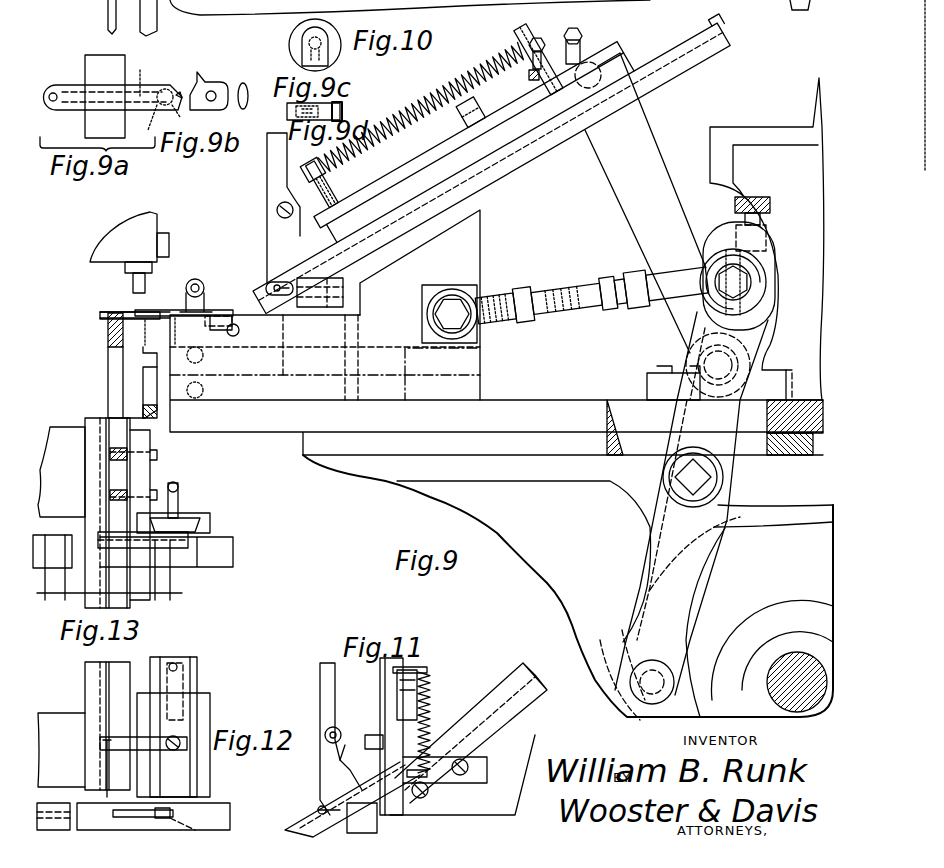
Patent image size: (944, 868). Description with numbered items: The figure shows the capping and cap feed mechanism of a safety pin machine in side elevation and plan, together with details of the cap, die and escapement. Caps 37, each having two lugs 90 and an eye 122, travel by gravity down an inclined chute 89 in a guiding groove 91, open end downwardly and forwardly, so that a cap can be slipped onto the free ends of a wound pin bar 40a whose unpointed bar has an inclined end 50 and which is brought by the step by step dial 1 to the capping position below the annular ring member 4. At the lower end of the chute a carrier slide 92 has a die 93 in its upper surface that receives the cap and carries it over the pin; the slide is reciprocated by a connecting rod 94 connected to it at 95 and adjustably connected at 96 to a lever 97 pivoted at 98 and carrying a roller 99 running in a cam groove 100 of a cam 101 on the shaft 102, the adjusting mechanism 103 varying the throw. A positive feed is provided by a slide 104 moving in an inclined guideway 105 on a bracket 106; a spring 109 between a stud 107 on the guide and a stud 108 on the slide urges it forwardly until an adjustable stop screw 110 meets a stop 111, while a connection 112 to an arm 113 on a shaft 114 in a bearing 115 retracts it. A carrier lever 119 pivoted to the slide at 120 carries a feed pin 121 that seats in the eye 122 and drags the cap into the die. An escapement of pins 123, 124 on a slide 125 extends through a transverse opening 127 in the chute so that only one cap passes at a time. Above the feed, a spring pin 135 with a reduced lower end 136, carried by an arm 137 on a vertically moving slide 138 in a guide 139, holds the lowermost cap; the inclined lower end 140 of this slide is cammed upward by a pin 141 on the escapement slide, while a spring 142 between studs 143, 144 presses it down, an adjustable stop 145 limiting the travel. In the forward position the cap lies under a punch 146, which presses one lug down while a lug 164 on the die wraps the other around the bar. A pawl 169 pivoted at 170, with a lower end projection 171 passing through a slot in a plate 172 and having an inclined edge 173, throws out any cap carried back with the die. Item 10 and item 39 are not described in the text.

In FIG. 9, the dial 1 is at (96, 335).
In FIG. 9, the annular ring member 4 is at (108, 6).
In FIG. 9A, the pin 10 is at (53, 103).
In FIG. 9A, the cap 37 is at (166, 112).
In FIG. 9B, the cap 37 is at (219, 80).
In FIG. 9C, the cap 37 is at (328, 31).
In FIG. 9, the plate 39 is at (126, 303).
In FIG. 9A, the wound pin bar 40a is at (86, 80).
In FIG. 9, the wound pin bar 40a is at (102, 322).
In FIG. 9A, the inclined end 50 is at (178, 90).
In FIG. 10, the inclined chute 89 is at (620, 56).
In FIG. 13, the inclined chute 89 is at (85, 474).
In FIG. 12, the inclined chute 89 is at (85, 700).
In FIG. 11, the inclined chute 89 is at (530, 712).
In FIG. 9A, the lugs 90 is at (145, 74).
In FIG. 9B, the lugs 90 is at (199, 80).
In FIG. 13, the guiding groove 91 is at (108, 443).
In FIG. 12, the guiding groove 91 is at (100, 675).
In FIG. 9, the carrier slide 92 is at (375, 313).
In FIG. 9C, the die 93 is at (289, 27).
In FIG. 9D, the die 93 is at (344, 111).
In FIG. 9, the die 93 is at (141, 322).
In FIG. 9, the connecting rod 94 is at (577, 294).
In FIG. 9, the connection 95 is at (452, 310).
In FIG. 9, the adjustable connection 96 is at (756, 283).
In FIG. 9, the lever 97 is at (691, 503).
In FIG. 9, the pivot 98 is at (700, 478).
In FIG. 9, the roller 99 is at (652, 705).
In FIG. 9, the cam groove 100 is at (741, 617).
In FIG. 9, the cam 101 is at (775, 505).
In FIG. 9, the shaft 102 is at (780, 662).
In FIG. 9, the adjusting mechanism 103 is at (735, 205).
In FIG. 10, the slide 104 is at (507, 122).
In FIG. 10, the guideway 105 is at (407, 160).
In FIG. 10, the bracket 106 is at (482, 233).
In FIG. 10, the stud 107 is at (335, 186).
In FIG. 10, the stud 108 is at (548, 42).
In FIG. 10, the spring 109 is at (428, 100).
In FIG. 10, the adjustable stop screw 110 is at (538, 60).
In FIG. 10, the stop 111 is at (528, 48).
In FIG. 10, the connection 112 is at (592, 62).
In FIG. 10, the arm 113 is at (640, 134).
In FIG. 9, the shaft 114 is at (735, 362).
In FIG. 9, the bearing 115 is at (647, 383).
In FIG. 10, the carrier lever 119 is at (267, 174).
In FIG. 11, the carrier lever 119 is at (320, 690).
In FIG. 10, the pivot 120 is at (277, 211).
In FIG. 11, the pivot 120 is at (327, 730).
In FIG. 10, the feed pin 121 is at (270, 280).
In FIG. 9A, the eye 122 is at (178, 109).
In FIG. 9B, the eye 122 is at (221, 91).
In FIG. 13, the escapement pin 123 is at (45, 600).
In FIG. 12, the escapement pin 123 is at (85, 803).
In FIG. 13, the escapement pin 124 is at (172, 587).
In FIG. 12, the escapement pin 124 is at (135, 818).
In FIG. 13, the slide 125 is at (233, 558).
In FIG. 12, the slide 125 is at (230, 816).
In FIG. 11, the slide 125 is at (378, 828).
In FIG. 13, the transverse opening 127 is at (107, 576).
In FIG. 12, the spring pin 135 is at (105, 760).
In FIG. 11, the spring pin 135 is at (338, 738).
In FIG. 11, the reduced lower end 136 is at (375, 790).
In FIG. 13, the arm 137 is at (183, 540).
In FIG. 12, the arm 137 is at (178, 740).
In FIG. 11, the arm 137 is at (375, 738).
In FIG. 13, the vertically moving slide 138 is at (185, 525).
In FIG. 12, the vertically moving slide 138 is at (168, 665).
In FIG. 13, the guide 139 is at (210, 527).
In FIG. 12, the guide 139 is at (210, 773).
In FIG. 11, the guide 139 is at (405, 755).
In FIG. 12, the inclined lower end 140 is at (169, 825).
In FIG. 12, the pin 141 is at (155, 822).
In FIG. 11, the pin 141 is at (405, 810).
In FIG. 13, the spring 142 is at (176, 484).
In FIG. 12, the spring 142 is at (175, 691).
In FIG. 11, the spring 142 is at (432, 695).
In FIG. 11, the stud 143 is at (430, 778).
In FIG. 13, the stud 144 is at (178, 505).
In FIG. 11, the stud 144 is at (420, 670).
In FIG. 12, the adjustable stop 145 is at (197, 672).
In FIG. 11, the adjustable stop 145 is at (400, 680).
In FIG. 9, the punch 146 is at (133, 278).
In FIG. 9C, the lug 164 is at (325, 52).
In FIG. 9D, the lug 164 is at (302, 120).
In FIG. 9, the pawl 169 is at (208, 300).
In FIG. 9, the pivot 170 is at (193, 279).
In FIG. 9, the lower end projection 171 is at (186, 311).
In FIG. 9, the plate 172 is at (148, 310).
In FIG. 9, the inclined edge 173 is at (226, 310).